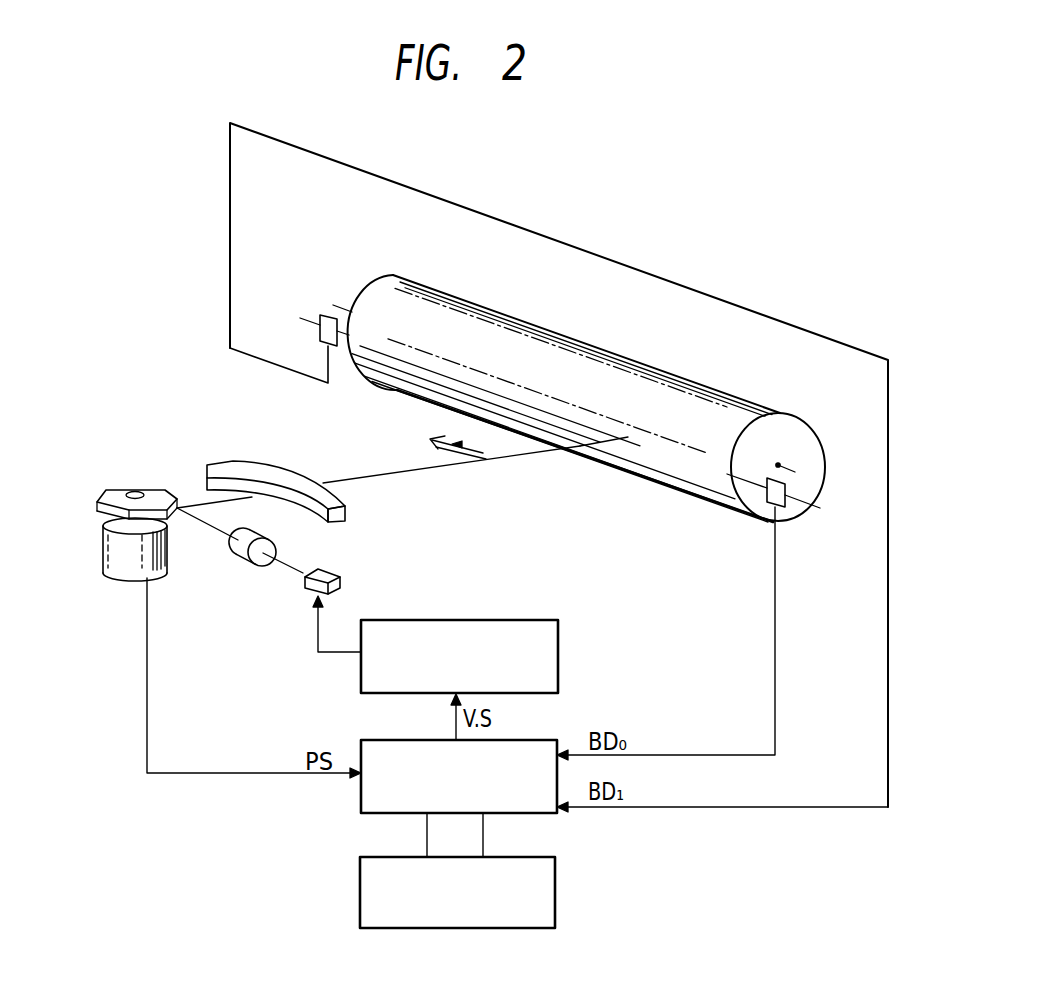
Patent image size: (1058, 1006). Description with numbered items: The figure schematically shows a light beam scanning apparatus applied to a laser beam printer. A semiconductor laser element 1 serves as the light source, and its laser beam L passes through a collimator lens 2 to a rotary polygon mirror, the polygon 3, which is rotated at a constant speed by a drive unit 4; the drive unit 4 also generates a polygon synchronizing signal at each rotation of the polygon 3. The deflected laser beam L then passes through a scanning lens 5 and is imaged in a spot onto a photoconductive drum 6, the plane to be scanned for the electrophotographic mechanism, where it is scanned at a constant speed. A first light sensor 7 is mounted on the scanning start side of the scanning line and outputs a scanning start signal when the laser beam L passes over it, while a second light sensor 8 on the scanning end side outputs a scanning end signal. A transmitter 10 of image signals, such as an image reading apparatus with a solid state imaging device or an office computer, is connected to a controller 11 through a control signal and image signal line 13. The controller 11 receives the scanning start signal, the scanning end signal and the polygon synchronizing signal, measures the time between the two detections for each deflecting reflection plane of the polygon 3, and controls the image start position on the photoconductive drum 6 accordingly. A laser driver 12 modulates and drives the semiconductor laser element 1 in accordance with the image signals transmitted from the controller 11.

The semiconductor laser element 1 is at (341, 573).
The collimator lens 2 is at (252, 572).
The polygon 3 is at (137, 481).
The drive unit 4 is at (129, 573).
The scanning lens 5 is at (276, 469).
The photoconductive drum 6 is at (586, 398).
The first light sensor 7 is at (702, 617).
The second light sensor 8 is at (326, 306).
The transmitter 10 is at (486, 903).
The controller 11 is at (472, 760).
The laser driver 12 is at (487, 656).
The control signal and image signal line 13 is at (627, 854).
The rotation axis of polygon mirror a is at (113, 473).
The scanning direction b is at (448, 439).
The laser beam L is at (402, 505).